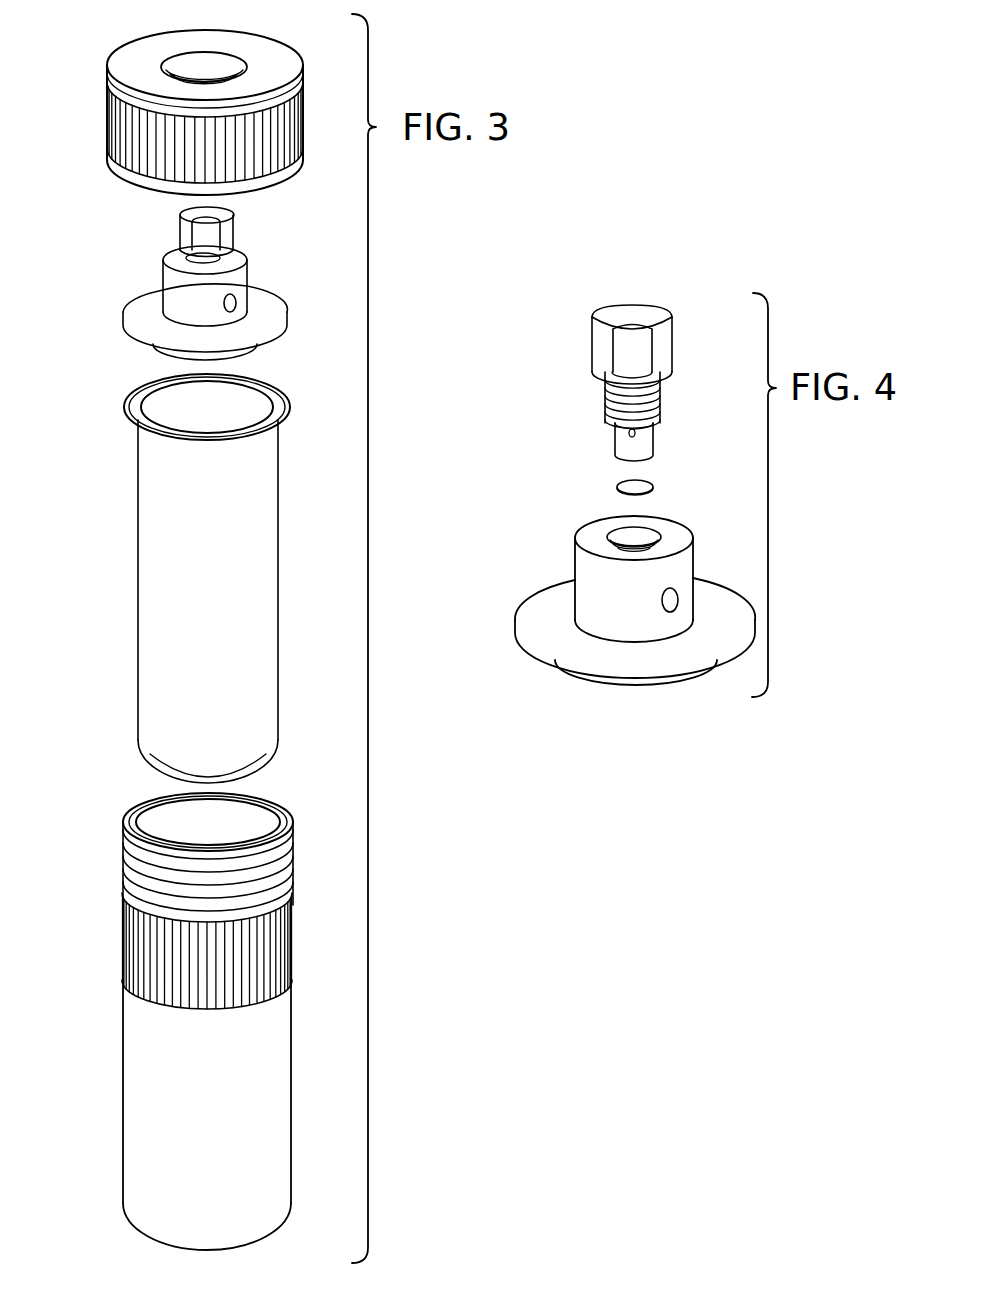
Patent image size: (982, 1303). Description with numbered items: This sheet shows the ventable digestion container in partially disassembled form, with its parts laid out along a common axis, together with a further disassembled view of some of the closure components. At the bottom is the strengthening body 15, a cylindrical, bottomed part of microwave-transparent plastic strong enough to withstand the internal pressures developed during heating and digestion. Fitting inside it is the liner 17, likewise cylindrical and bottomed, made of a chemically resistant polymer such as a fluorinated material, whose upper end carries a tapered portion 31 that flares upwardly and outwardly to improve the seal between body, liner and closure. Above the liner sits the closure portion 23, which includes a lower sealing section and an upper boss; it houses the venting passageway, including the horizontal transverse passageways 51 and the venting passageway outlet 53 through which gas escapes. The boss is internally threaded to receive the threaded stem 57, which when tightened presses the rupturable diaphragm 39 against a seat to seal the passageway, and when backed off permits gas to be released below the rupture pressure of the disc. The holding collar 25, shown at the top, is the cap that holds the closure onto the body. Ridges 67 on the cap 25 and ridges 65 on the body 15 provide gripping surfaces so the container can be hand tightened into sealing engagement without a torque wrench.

In FIG. 3, the body 15 is at (123, 1157).
In FIG. 3, the liner 17 is at (138, 640).
In FIG. 3, the closure portion 23 is at (248, 270).
In FIG. 4, the closure portion 23 is at (693, 552).
In FIG. 3, the holding collar 25 is at (107, 80).
In FIG. 3, the tapered portion 31 is at (135, 392).
In FIG. 4, the rupturable diaphragm 39 is at (655, 485).
In FIG. 4, the horizontal transverse passageways 51 is at (640, 433).
In FIG. 3, the venting passageway outlet 53 is at (236, 303).
In FIG. 3, the threaded stem 57 is at (180, 232).
In FIG. 4, the threaded stem 57 is at (655, 310).
In FIG. 3, the ridges 65 is at (140, 947).
In FIG. 3, the ridges 67 is at (122, 130).